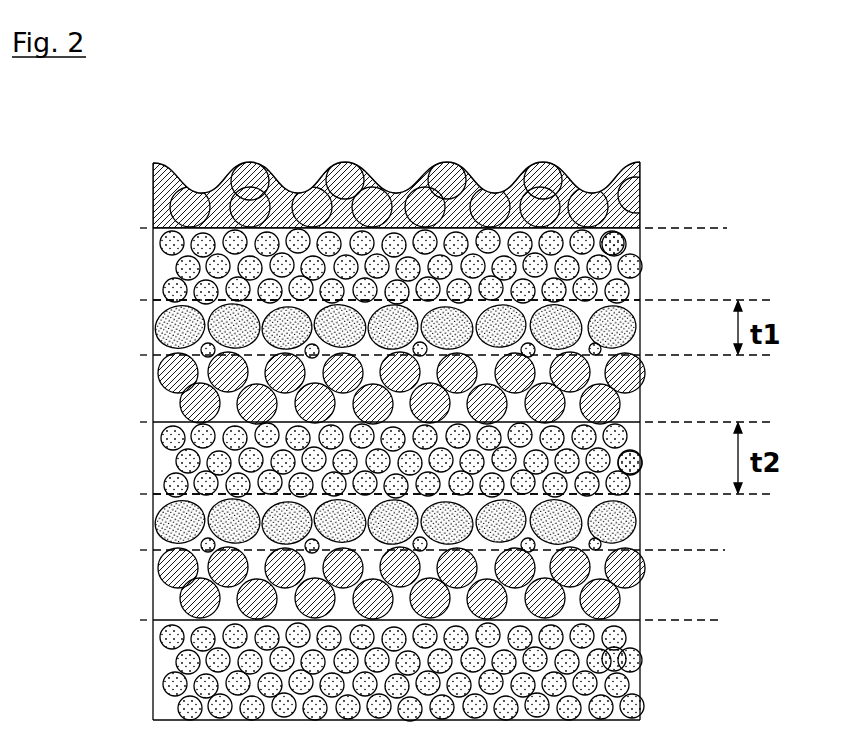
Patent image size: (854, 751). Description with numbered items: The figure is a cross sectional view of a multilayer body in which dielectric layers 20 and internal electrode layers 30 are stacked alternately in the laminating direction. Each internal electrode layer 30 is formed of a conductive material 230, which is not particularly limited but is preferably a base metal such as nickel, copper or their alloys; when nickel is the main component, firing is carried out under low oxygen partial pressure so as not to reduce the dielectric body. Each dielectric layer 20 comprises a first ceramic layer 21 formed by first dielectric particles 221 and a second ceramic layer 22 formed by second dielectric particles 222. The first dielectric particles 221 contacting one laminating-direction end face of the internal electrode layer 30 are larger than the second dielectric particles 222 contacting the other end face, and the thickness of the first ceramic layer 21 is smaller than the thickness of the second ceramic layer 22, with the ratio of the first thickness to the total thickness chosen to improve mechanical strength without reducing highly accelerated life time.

The dielectric layer 20 is at (67, 235).
The first ceramic layer 21 is at (130, 300).
The second ceramic layer 22 is at (130, 237).
The internal electrode layer 30 is at (130, 170).
The first dielectric particle 221 is at (640, 322).
The second dielectric particle 222 is at (640, 269).
The conductive material 230 is at (640, 188).